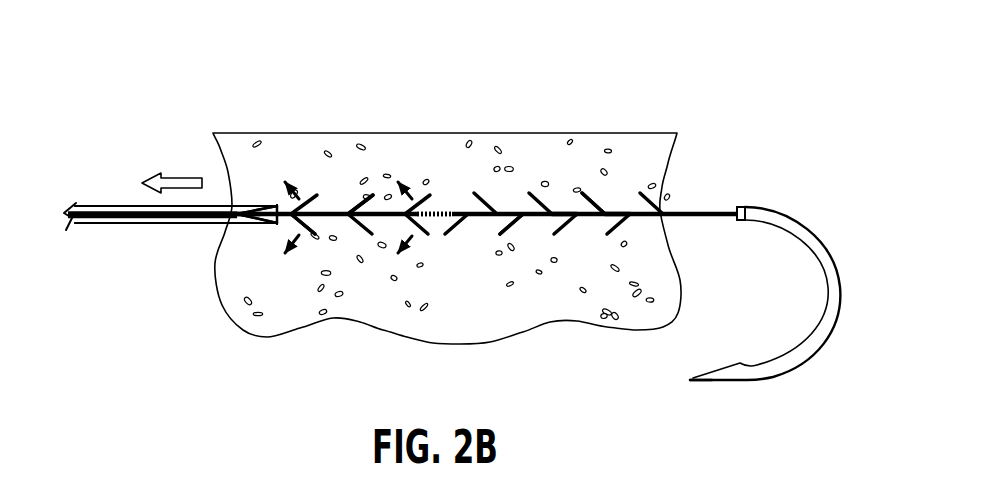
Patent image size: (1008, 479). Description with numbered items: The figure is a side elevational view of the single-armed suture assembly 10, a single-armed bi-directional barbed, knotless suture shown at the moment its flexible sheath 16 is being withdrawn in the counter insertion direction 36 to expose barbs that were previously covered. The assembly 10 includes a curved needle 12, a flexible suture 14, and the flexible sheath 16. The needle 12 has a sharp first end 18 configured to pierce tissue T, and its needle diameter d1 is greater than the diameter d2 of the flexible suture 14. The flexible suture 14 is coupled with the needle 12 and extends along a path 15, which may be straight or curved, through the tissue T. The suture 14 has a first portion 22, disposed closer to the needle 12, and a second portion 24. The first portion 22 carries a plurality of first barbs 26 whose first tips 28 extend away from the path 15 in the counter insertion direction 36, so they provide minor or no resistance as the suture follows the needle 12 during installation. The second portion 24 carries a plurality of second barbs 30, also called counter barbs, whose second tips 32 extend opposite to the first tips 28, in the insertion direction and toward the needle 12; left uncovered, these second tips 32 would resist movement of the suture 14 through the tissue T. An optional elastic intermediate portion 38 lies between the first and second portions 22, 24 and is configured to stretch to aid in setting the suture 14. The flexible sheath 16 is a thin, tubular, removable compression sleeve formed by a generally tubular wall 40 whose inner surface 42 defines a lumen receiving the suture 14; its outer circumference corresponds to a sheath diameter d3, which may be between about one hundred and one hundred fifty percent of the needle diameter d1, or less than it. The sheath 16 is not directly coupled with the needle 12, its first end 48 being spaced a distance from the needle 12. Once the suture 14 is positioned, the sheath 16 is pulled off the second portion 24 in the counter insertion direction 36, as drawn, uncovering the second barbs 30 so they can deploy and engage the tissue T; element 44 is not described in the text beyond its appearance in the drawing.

The single-armed suture assembly 10 is at (91, 67).
The needle 12 is at (819, 238).
The flexible suture 14 is at (480, 174).
The path 15 is at (720, 218).
The flexible sheath 16 is at (167, 232).
The first end 18 is at (692, 380).
The first portion 22 is at (563, 191).
The second portion 24 is at (345, 191).
The first barbs 26 is at (574, 235).
The first tips 28 is at (583, 196).
The second barbs 30 is at (295, 227).
The second tips 32 is at (371, 195).
The counter insertion direction 36 is at (160, 173).
The elastic intermediate portion 38 is at (436, 217).
The tubular wall 40 is at (248, 204).
The inner surface 42 is at (91, 207).
The tube lower wall 44 is at (97, 225).
The first end 48 is at (281, 205).
The tissue T is at (645, 157).
The needle diameter d1 is at (779, 318).
The diameter d2 is at (701, 249).
The sheath diameter d3 is at (127, 160).